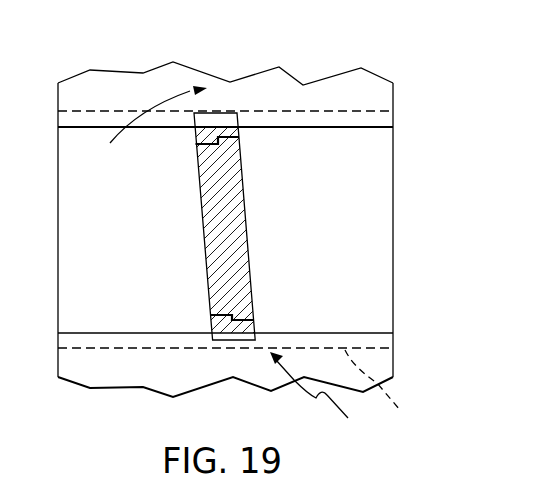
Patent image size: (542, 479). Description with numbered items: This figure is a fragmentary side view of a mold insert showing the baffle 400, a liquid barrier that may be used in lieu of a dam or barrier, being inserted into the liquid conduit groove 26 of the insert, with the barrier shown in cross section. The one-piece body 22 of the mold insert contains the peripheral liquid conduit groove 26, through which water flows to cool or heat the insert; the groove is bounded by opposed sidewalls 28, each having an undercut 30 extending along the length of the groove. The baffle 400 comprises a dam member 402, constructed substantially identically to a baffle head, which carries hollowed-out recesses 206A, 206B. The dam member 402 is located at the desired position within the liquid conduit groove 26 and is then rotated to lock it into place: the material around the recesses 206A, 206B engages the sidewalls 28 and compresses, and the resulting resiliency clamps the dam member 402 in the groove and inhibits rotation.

The one-piece body 22 is at (117, 90).
The liquid conduit groove 26 is at (90, 282).
The sidewalls 28 is at (142, 333).
The undercut 30 is at (389, 389).
The recess 206A is at (232, 133).
The recess 206B is at (213, 317).
The baffle 400 is at (326, 403).
The dam member 402 is at (240, 232).